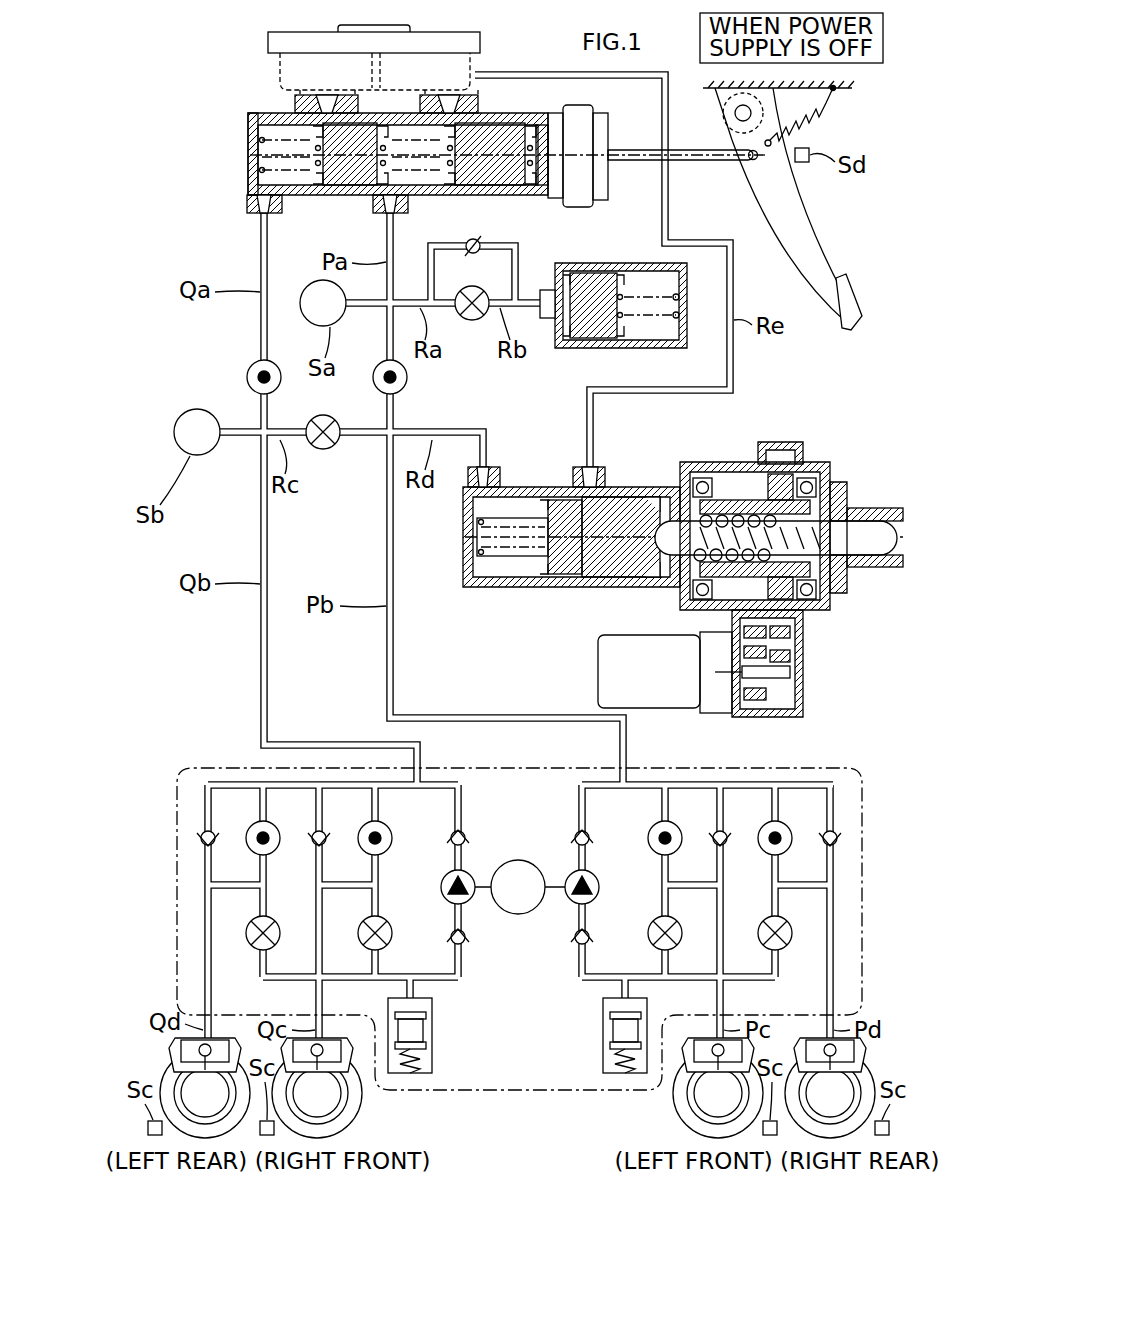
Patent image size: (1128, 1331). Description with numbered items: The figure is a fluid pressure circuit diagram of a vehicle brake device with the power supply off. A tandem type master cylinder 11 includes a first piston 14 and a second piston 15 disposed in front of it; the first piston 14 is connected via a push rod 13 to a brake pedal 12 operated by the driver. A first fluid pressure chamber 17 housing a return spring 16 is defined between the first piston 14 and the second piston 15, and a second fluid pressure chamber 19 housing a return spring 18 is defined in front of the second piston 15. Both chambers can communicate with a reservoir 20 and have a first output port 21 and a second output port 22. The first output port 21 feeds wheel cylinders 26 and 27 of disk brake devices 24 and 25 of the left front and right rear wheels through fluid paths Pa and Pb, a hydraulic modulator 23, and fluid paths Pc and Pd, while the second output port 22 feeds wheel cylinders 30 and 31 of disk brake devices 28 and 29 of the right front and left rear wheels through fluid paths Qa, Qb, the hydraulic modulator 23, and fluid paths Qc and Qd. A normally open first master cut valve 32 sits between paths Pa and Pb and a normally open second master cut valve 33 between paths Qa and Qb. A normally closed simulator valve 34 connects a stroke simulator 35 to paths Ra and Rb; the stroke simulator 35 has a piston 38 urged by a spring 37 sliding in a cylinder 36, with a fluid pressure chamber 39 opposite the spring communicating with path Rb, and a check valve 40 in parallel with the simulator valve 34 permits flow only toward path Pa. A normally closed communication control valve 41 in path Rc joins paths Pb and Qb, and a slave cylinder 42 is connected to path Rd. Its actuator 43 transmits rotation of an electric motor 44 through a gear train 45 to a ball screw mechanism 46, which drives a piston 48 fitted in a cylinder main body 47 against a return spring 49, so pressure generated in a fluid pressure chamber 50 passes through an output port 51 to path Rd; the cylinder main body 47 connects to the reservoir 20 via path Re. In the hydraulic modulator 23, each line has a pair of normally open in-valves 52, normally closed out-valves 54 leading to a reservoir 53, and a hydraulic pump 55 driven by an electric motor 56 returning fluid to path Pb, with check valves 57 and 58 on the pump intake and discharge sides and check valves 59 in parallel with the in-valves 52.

The master cylinder 11 is at (258, 100).
The brake pedal 12 is at (783, 232).
The push rod 13 is at (636, 163).
The first piston 14 is at (490, 168).
The second piston 15 is at (350, 174).
The return spring 16 is at (442, 172).
The first fluid pressure chamber 17 is at (416, 142).
The return spring 18 is at (252, 168).
The second fluid pressure chamber 19 is at (268, 138).
The reservoir 20 is at (462, 62).
The first output port 21 is at (388, 206).
The second output port 22 is at (260, 218).
The hydraulic modulator 23 is at (178, 766).
The disk brake device 24 is at (672, 1123).
The disk brake device 25 is at (868, 1060).
The wheel cylinder 26 is at (718, 1088).
The wheel cylinder 27 is at (830, 1088).
The disk brake device 28 is at (367, 1118).
The disk brake device 29 is at (165, 1060).
The wheel cylinder 30 is at (317, 1088).
The wheel cylinder 31 is at (205, 1088).
The first master cut valve 32 is at (408, 383).
The second master cut valve 33 is at (250, 368).
The simulator valve 34 is at (474, 288).
The stroke simulator 35 is at (582, 356).
The cylinder 36 is at (637, 350).
The spring 37 is at (680, 318).
The piston 38 is at (608, 272).
The fluid pressure chamber 39 is at (574, 272).
The check valve 40 is at (480, 243).
The communication control valve 41 is at (325, 450).
The slave cylinder 42 is at (745, 428).
The actuator 43 is at (840, 478).
The electric motor 44 is at (634, 685).
The gear train 45 is at (786, 660).
The ball screw mechanism 46 is at (735, 490).
The cylinder main body 47 is at (576, 580).
The piston 48 is at (628, 520).
The return spring 49 is at (477, 566).
The fluid pressure chamber 50 is at (513, 570).
The output port 51 is at (488, 472).
The in-valve 52 is at (256, 830).
The reservoir 53 is at (434, 1035).
The out-valve 54 is at (252, 942).
The hydraulic pump 55 is at (470, 878).
The electric motor 56 is at (518, 915).
The check valve 57 is at (466, 946).
The check valve 58 is at (466, 832).
The check valve 59 is at (200, 832).